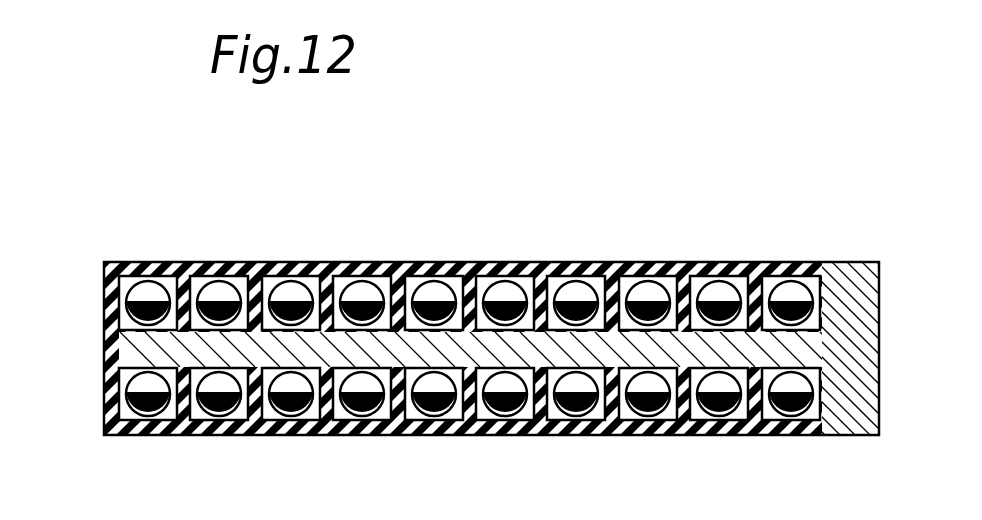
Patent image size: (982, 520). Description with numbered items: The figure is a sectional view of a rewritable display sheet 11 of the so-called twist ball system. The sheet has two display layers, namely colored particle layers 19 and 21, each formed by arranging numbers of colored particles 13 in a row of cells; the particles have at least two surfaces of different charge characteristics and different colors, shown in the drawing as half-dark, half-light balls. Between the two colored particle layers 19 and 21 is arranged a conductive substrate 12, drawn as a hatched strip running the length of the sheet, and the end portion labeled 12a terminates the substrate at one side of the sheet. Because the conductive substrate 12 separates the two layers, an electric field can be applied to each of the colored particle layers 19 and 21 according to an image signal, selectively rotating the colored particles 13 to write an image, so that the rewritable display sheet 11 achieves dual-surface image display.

The rewritable display sheet 11 is at (504, 330).
The conductive substrate 12 is at (595, 328).
The end portion of substrate 12a is at (848, 270).
The colored particle 13 is at (508, 281).
The colored particle layer 19 is at (121, 283).
The colored particle layer 21 is at (121, 373).